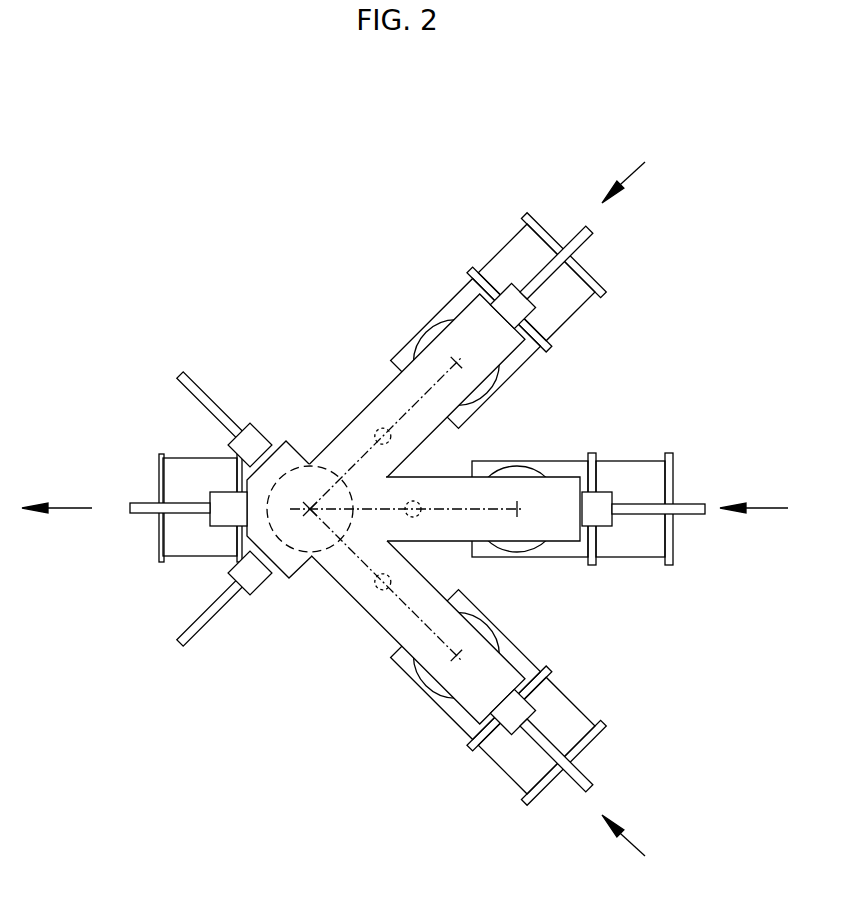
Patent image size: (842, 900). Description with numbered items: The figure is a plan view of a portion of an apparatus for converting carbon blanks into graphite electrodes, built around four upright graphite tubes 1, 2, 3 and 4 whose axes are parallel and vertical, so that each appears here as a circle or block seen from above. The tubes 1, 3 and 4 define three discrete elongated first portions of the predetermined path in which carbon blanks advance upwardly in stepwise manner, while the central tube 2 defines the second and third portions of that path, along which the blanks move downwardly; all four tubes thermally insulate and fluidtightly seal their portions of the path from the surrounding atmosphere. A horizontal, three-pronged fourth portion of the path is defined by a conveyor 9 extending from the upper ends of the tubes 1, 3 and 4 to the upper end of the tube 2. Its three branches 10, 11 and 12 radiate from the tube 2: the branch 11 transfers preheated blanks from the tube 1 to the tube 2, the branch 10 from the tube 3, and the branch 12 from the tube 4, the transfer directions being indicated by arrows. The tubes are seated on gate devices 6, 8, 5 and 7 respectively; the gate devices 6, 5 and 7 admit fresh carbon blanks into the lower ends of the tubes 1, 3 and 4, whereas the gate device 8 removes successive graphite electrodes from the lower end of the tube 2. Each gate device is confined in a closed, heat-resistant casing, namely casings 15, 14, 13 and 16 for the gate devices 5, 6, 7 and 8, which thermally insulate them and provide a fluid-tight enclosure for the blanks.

The graphite tube 1 is at (548, 459).
The graphite tube 2 is at (331, 470).
The graphite tube 3 is at (432, 320).
The graphite tube 4 is at (490, 623).
The gate device 5 is at (542, 268).
The gate device 6 is at (647, 476).
The gate device 7 is at (516, 724).
The gate device 8 is at (188, 510).
The conveyor 9 is at (354, 396).
The branch of the conveyor 10 is at (502, 343).
The branch of the conveyor 11 is at (567, 525).
The branch of the conveyor 12 is at (547, 668).
The closed casing 13 is at (500, 778).
The closed casing 14 is at (652, 458).
The closed casing 15 is at (583, 304).
The closed casing 16 is at (180, 458).